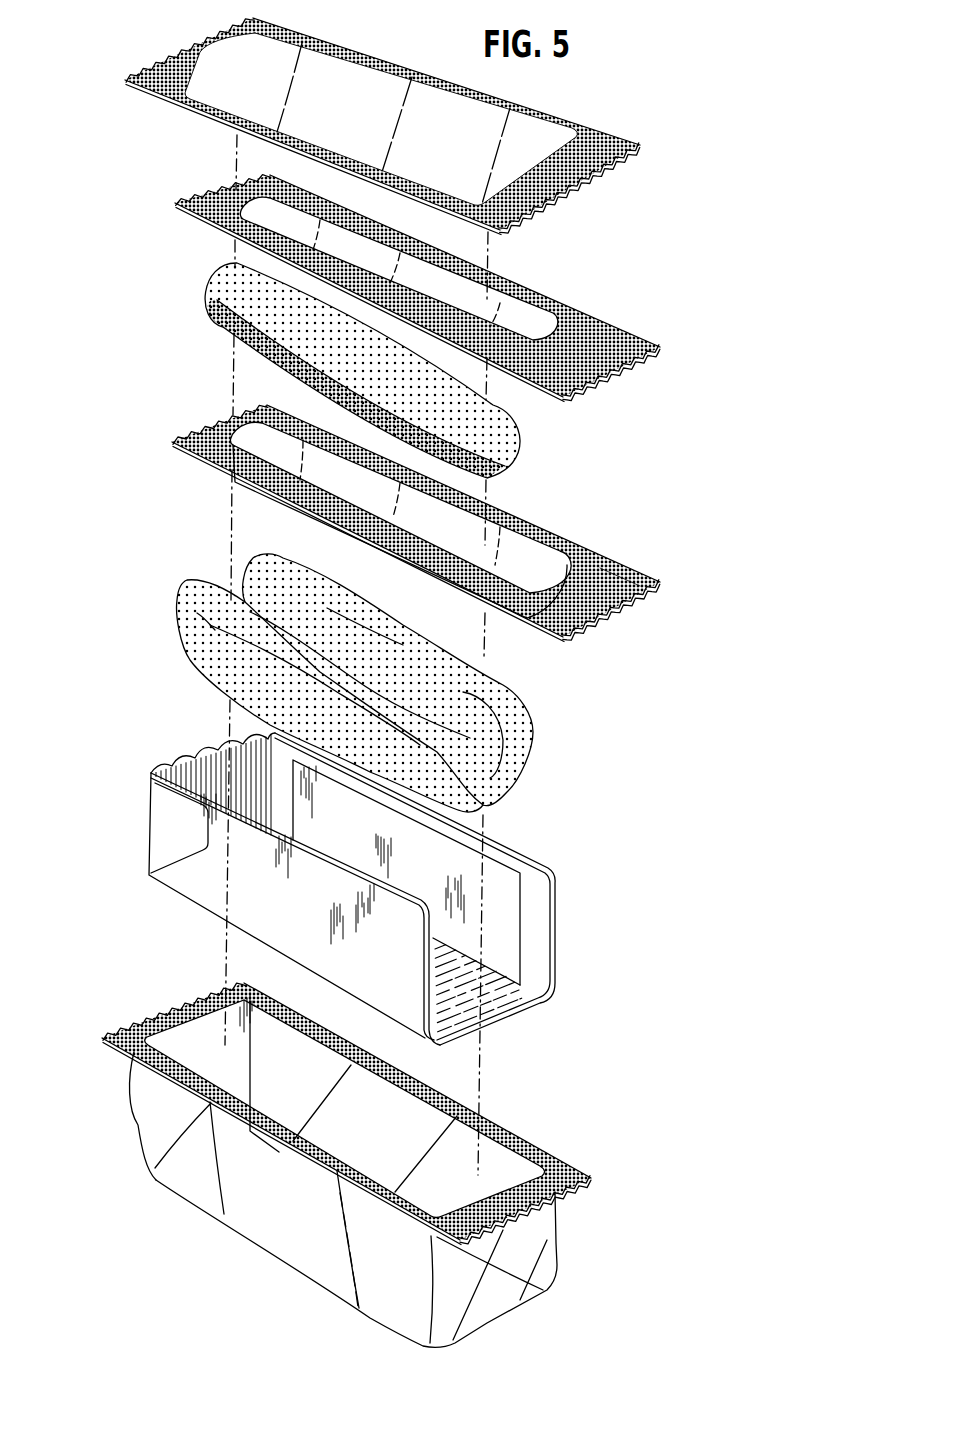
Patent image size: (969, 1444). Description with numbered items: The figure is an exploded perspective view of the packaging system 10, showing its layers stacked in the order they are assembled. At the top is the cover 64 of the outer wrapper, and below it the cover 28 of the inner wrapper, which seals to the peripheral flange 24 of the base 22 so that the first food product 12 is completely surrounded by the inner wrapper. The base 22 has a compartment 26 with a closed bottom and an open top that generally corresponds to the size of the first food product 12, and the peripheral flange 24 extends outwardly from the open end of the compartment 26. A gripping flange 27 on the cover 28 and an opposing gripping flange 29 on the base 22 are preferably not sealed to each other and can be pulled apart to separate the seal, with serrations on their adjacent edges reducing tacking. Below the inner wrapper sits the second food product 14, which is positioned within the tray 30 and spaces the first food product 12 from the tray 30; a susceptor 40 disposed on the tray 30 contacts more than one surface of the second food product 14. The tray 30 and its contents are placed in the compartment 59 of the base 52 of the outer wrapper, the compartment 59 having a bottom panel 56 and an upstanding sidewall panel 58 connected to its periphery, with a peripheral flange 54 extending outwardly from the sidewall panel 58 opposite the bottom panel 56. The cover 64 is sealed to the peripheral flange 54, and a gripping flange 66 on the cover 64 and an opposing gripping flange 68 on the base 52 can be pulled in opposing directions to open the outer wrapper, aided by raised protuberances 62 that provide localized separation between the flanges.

The packaging system 10 is at (126, 375).
The first food product 12 is at (524, 424).
The second food product 14 is at (537, 708).
The base 22 is at (587, 555).
The peripheral flange 24 is at (608, 560).
The compartment 26 is at (523, 553).
The gripping flange 27 is at (625, 352).
The cover 28 is at (552, 298).
The gripping flange 29 is at (620, 615).
The tray 30 is at (557, 870).
The susceptor 40 is at (517, 930).
The base 52 is at (562, 1261).
The peripheral flange 54 is at (504, 1127).
The bottom panel 56 is at (268, 1247).
The sidewall panel 58 is at (139, 1131).
The compartment 59 is at (197, 1040).
The raised protuberances 62 is at (547, 1189).
The cover 64 is at (362, 57).
The gripping flange 66 is at (603, 137).
The gripping flange 68 is at (576, 1170).